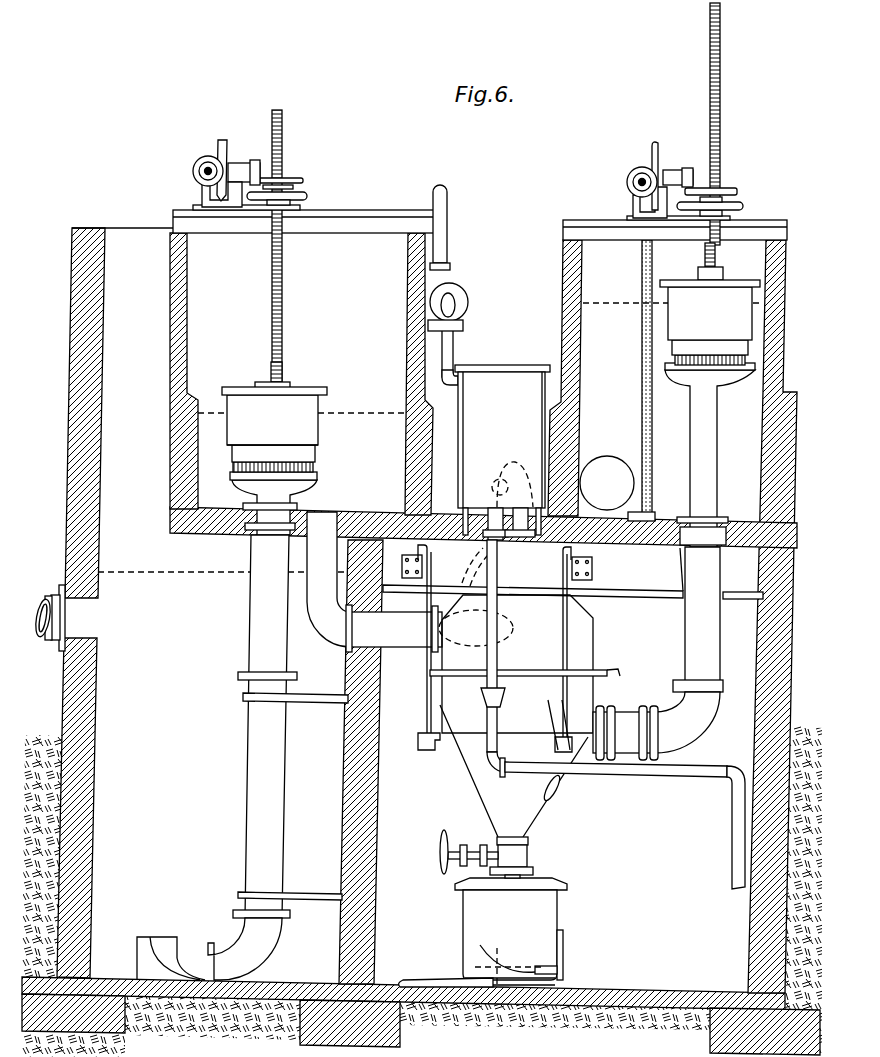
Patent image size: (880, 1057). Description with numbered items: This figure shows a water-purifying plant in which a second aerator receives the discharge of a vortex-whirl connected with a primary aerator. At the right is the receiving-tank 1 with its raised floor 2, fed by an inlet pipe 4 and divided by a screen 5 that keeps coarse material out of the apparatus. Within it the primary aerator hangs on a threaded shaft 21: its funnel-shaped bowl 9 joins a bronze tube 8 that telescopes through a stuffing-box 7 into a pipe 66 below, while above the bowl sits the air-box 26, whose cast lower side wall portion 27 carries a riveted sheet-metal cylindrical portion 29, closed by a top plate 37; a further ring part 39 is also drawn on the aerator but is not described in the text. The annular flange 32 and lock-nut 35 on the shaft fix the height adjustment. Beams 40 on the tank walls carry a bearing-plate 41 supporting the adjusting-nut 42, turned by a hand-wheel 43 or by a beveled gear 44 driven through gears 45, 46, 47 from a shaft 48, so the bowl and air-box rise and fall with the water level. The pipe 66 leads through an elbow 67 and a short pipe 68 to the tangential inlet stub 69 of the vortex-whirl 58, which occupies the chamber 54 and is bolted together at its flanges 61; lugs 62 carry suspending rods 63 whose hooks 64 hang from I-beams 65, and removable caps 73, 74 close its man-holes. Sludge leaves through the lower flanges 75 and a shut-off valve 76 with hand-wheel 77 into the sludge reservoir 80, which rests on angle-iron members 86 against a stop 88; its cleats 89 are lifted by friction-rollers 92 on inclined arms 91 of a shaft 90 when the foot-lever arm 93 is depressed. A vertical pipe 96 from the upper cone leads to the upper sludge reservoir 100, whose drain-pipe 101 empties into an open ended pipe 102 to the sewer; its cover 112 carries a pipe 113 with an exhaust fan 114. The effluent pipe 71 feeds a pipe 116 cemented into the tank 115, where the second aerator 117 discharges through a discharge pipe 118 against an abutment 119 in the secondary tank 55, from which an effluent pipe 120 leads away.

The receiving-tank 1 is at (782, 616).
The raised floor 2 is at (666, 523).
The inlet pipe 4 is at (611, 468).
The screen 5 is at (642, 268).
The stuffing-box 7 is at (268, 511).
The bronze tube 8 is at (291, 497).
The funnel-shaped bowl 9 is at (290, 486).
The shaft 21 is at (283, 141).
The air-box 26 is at (752, 303).
The lower side wall portion 27 is at (312, 455).
The sheet-metal cylindrical portion 29 is at (319, 410).
The annular flange 32 is at (258, 381).
The lock-nut 35 is at (283, 384).
The top plate 37 is at (320, 392).
The toothed ring 39 is at (234, 465).
The beams 40 is at (178, 216).
The bearing-plate 41 is at (301, 200).
The adjusting-nut 42 is at (722, 198).
The hand-wheel 43 is at (308, 197).
The beveled gear 44 is at (293, 180).
The gear 45 is at (255, 162).
The gear 46 is at (240, 146).
The gear 47 is at (206, 160).
The shaft 48 is at (193, 170).
The chamber 54 is at (625, 825).
The secondary tank 55 is at (220, 606).
The vortex-whirl 58 is at (593, 648).
The flanges 61 is at (596, 673).
The lugs 62 is at (430, 751).
The suspending rods 63 is at (568, 636).
The hooks 64 is at (593, 565).
The I-beams 65 is at (596, 588).
The pipe 66 is at (690, 633).
The elbow 67 is at (702, 722).
The short pipe 68 is at (646, 708).
The inlet stub 69 is at (607, 707).
The effluent pipe 71 is at (413, 640).
The removable cap 73 is at (436, 574).
The removable cap 74 is at (560, 793).
The flanges 75 is at (530, 842).
The shut-off valve 76 is at (528, 856).
The hand-wheel 77 is at (441, 845).
The sludge reservoir 80 is at (486, 912).
The angle-iron members 86 is at (470, 978).
The stop 88 is at (565, 951).
The angle-iron cleats 89 is at (560, 968).
The shaft 90 is at (481, 963).
The inclined arms 91 is at (522, 968).
The friction-rollers 92 is at (500, 958).
The foot-lever arm 93 is at (413, 977).
The vertical pipe 96 is at (507, 482).
The upper sludge reservoir 100 is at (502, 440).
The drain-pipe 101 is at (500, 621).
The open ended pipe 102 is at (497, 737).
The cover 112 is at (513, 365).
The pipe 113 is at (449, 350).
The exhaust fan 114 is at (463, 290).
The tank 115 is at (301, 374).
The pipe 116 is at (323, 530).
The aerator 117 is at (300, 431).
The discharge pipe 118 is at (250, 632).
The abutment 119 is at (162, 936).
The effluent pipe 120 is at (51, 640).